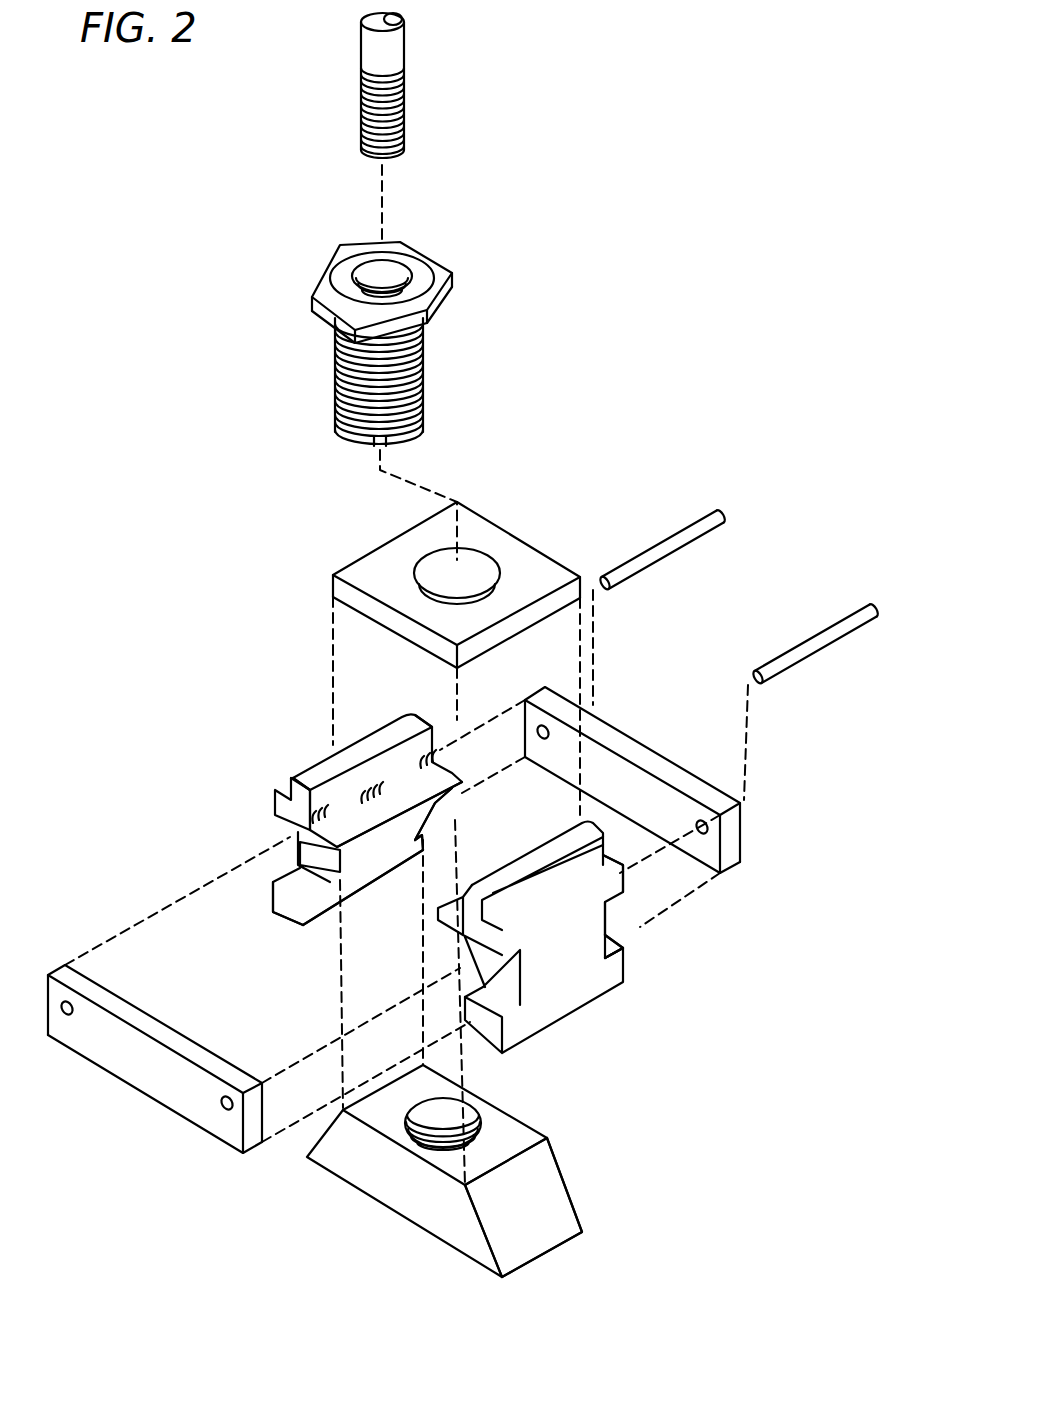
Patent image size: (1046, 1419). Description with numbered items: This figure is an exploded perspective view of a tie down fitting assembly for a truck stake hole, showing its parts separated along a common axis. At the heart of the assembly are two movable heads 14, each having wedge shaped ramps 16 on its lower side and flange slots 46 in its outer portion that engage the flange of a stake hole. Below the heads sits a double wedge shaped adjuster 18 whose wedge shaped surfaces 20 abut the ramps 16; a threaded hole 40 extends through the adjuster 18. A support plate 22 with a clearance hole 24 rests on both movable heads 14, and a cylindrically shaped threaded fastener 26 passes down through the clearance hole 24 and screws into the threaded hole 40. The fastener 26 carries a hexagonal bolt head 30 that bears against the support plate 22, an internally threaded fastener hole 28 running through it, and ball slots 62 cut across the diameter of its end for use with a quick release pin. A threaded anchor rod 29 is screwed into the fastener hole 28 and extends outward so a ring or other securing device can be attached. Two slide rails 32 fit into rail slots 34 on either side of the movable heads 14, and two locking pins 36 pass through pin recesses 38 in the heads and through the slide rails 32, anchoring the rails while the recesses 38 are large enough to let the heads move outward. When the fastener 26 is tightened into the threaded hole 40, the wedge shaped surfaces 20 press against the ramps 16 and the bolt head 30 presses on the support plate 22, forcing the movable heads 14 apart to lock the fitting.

The movable heads 14 is at (317, 763).
The wedge shaped ramps 16 is at (363, 887).
The double wedge shaped adjuster 18 is at (372, 1200).
The wedge shaped surfaces 20 is at (567, 1180).
The support plate 22 is at (378, 545).
The clearance hole 24 is at (483, 557).
The threaded fastener 26 is at (428, 356).
The internally threaded fastener hole 28 is at (388, 263).
The threaded anchor rod 29 is at (407, 73).
The hexagonal bolt head 30 is at (322, 312).
The slide rails 32 is at (623, 732).
The rail slots 34 is at (280, 873).
The locking pins 36 is at (688, 523).
The pin recesses 38 is at (297, 860).
The threaded hole 40 is at (472, 1110).
The flange slots 46 is at (290, 795).
The ball slots 62 is at (374, 441).